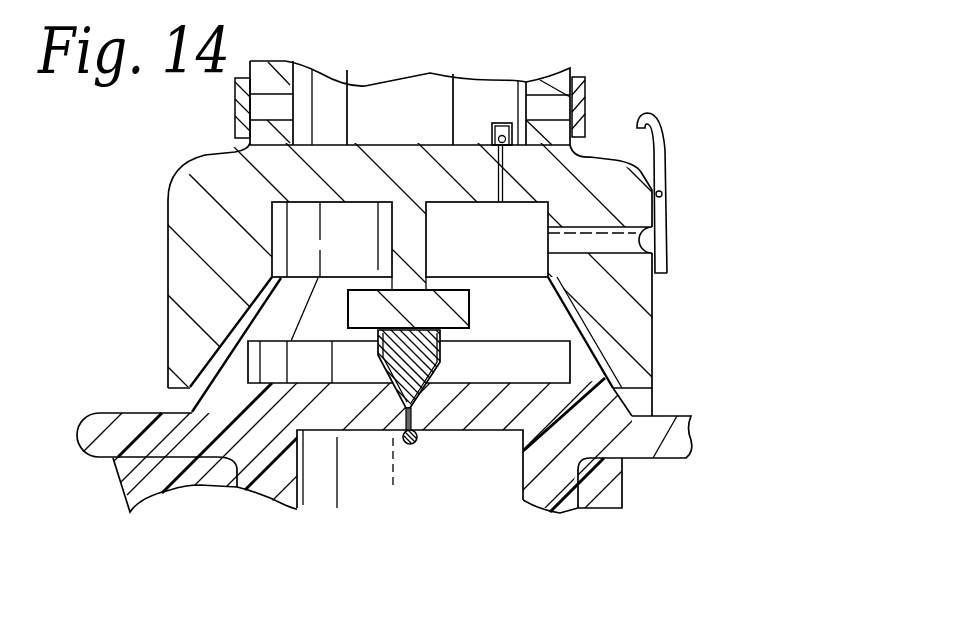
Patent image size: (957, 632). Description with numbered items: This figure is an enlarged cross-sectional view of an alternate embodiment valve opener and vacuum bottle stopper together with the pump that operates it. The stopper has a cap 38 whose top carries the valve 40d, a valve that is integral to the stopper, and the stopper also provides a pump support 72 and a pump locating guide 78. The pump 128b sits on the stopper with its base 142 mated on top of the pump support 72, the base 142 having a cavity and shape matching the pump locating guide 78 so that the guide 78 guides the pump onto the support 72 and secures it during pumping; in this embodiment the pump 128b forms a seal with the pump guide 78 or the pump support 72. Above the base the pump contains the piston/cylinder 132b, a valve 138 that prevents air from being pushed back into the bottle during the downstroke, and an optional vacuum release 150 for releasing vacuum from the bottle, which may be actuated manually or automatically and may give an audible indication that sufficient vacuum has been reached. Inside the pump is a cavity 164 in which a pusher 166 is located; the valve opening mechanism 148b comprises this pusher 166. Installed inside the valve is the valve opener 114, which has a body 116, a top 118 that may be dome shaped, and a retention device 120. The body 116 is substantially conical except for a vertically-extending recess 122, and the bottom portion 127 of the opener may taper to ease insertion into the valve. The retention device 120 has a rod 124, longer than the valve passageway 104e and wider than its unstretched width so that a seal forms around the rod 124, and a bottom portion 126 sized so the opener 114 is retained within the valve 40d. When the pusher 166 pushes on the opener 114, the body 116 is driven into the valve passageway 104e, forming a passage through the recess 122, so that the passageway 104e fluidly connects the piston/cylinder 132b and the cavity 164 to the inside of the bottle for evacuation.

The piston/cylinder 132b is at (366, 86).
The valve 138 is at (500, 122).
The pump 128b is at (638, 82).
The vacuum release 150 is at (668, 155).
The base 142 is at (167, 252).
The pump locating guide 78 is at (200, 362).
The pump support 72 is at (187, 412).
The body 116 is at (372, 336).
The valve opener 114 is at (388, 370).
The recess 122 is at (432, 362).
The top 118 is at (412, 334).
The valve opening mechanism 148b is at (462, 278).
The pusher 166 is at (470, 305).
The cavity 164 is at (560, 314).
The valve passageway 104e is at (418, 407).
The rod 124 is at (414, 424).
The bottom portion 127 is at (392, 420).
The valve 40d is at (402, 440).
The bottom portion 126 is at (405, 446).
The retention device 120 is at (425, 447).
The cap 38 is at (682, 407).